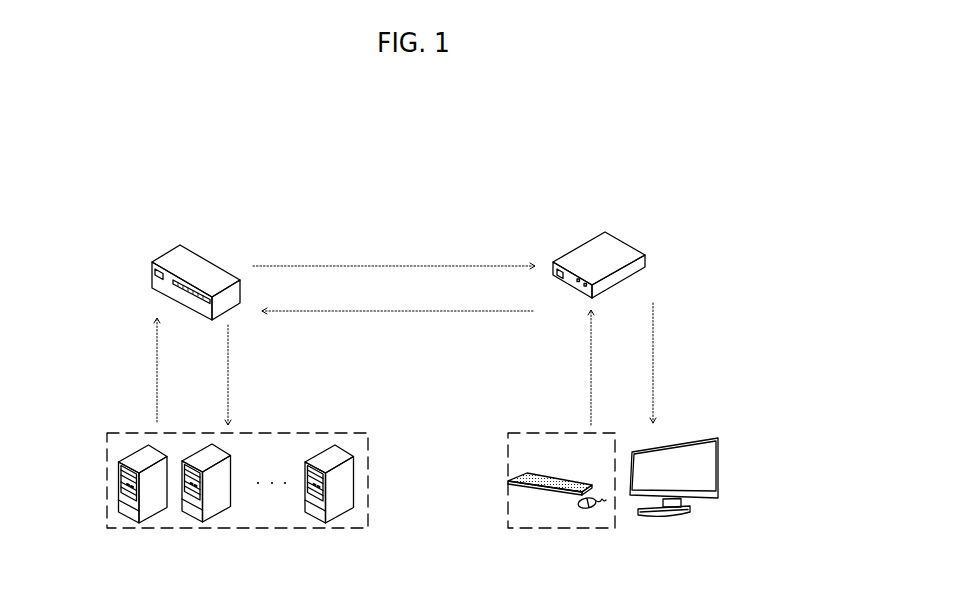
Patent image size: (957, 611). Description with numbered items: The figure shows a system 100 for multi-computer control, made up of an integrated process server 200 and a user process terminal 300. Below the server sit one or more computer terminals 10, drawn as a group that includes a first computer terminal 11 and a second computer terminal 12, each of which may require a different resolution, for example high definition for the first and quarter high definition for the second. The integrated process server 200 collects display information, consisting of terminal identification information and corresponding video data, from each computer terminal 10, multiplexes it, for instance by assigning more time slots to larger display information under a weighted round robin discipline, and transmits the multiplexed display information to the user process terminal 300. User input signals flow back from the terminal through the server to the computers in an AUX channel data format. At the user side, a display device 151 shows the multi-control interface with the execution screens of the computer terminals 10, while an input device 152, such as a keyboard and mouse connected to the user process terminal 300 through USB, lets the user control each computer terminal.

The system for a multi-computer control 100 is at (545, 166).
The integrated process server 200 is at (212, 263).
The user process terminal 300 is at (588, 250).
The computer terminals 10 is at (320, 432).
The first computer terminal 11 is at (155, 517).
The second computer terminal 12 is at (217, 517).
The display device 151 is at (663, 517).
The input device 152 is at (558, 530).